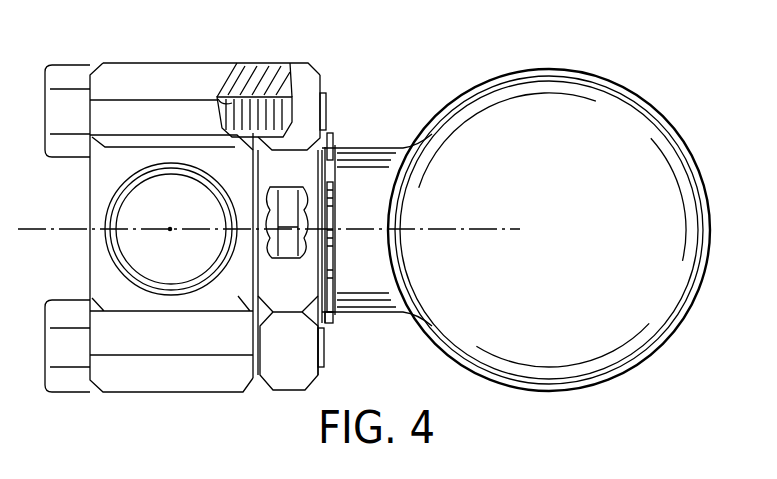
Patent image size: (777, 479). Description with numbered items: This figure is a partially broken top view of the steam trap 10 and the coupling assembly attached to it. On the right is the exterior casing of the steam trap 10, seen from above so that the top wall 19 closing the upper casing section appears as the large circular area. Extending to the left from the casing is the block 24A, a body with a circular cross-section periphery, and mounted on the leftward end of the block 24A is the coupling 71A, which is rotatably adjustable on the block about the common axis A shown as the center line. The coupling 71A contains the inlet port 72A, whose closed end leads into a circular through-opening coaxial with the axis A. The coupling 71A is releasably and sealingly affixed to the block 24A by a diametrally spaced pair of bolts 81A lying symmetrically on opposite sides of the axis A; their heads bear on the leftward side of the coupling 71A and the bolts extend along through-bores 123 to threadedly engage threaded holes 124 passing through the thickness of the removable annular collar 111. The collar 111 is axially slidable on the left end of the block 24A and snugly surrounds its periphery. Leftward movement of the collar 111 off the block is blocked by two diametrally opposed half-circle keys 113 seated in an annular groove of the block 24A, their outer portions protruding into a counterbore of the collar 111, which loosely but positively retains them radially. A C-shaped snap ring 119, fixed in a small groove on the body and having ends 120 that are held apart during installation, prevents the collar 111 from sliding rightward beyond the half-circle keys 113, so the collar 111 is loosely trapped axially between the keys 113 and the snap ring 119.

The steam trap 10 is at (651, 371).
The top wall 19 is at (552, 230).
The block 24A is at (388, 143).
The coupling 71A is at (139, 60).
The inlet port 72A is at (130, 196).
The bolts 81A is at (70, 74).
The annular collar 111 is at (282, 58).
The half-circle keys 113 is at (285, 202).
The snap ring 119 is at (328, 324).
The ends of the snap ring 120 is at (340, 163).
The through-bores 123 is at (220, 97).
The threaded holes 124 is at (297, 80).
The axis A is at (33, 229).
The point B is at (170, 231).